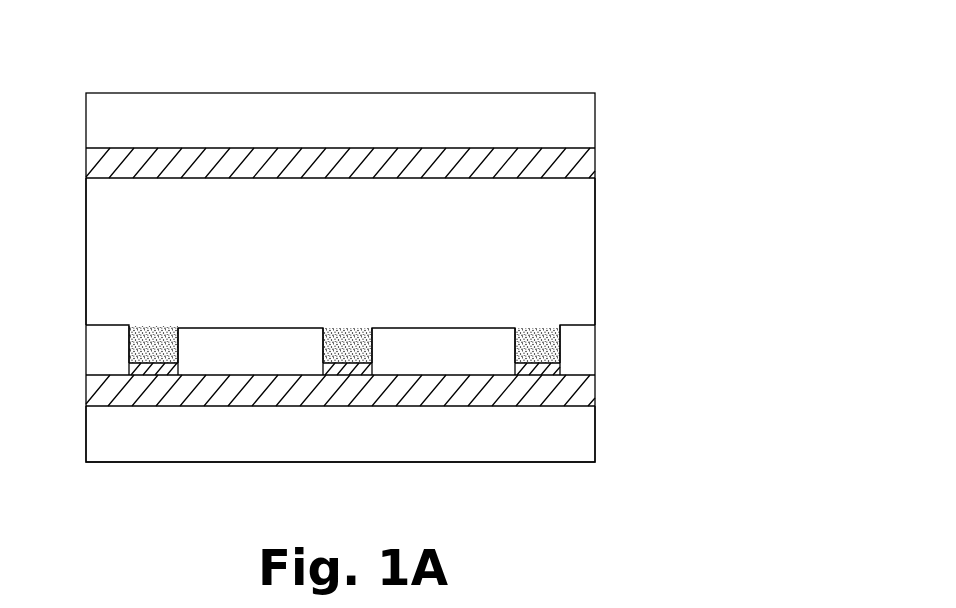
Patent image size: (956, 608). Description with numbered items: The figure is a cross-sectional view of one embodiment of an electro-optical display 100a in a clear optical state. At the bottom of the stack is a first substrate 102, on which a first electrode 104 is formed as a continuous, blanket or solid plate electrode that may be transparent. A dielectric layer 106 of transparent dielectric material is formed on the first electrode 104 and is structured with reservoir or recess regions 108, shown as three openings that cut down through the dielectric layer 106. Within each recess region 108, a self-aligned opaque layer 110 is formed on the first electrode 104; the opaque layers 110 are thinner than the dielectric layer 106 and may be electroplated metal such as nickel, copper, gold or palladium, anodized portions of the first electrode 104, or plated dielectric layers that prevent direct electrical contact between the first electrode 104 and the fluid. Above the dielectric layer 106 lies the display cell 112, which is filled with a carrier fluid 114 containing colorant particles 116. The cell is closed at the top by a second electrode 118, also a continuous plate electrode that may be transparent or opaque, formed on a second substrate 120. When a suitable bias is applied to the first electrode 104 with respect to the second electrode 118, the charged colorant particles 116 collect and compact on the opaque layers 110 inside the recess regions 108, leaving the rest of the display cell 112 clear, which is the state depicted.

The electro-optical display 100a is at (535, 36).
The first substrate 102 is at (580, 432).
The first electrode 104 is at (568, 384).
The dielectric layer 106 is at (585, 347).
The recess regions 108 is at (143, 312).
The opaque layers 110 is at (150, 373).
The display cell 112 is at (566, 251).
The carrier fluid 114 is at (375, 232).
The colorant particles 116 is at (158, 342).
The second electrode 118 is at (578, 161).
The second substrate 120 is at (563, 117).